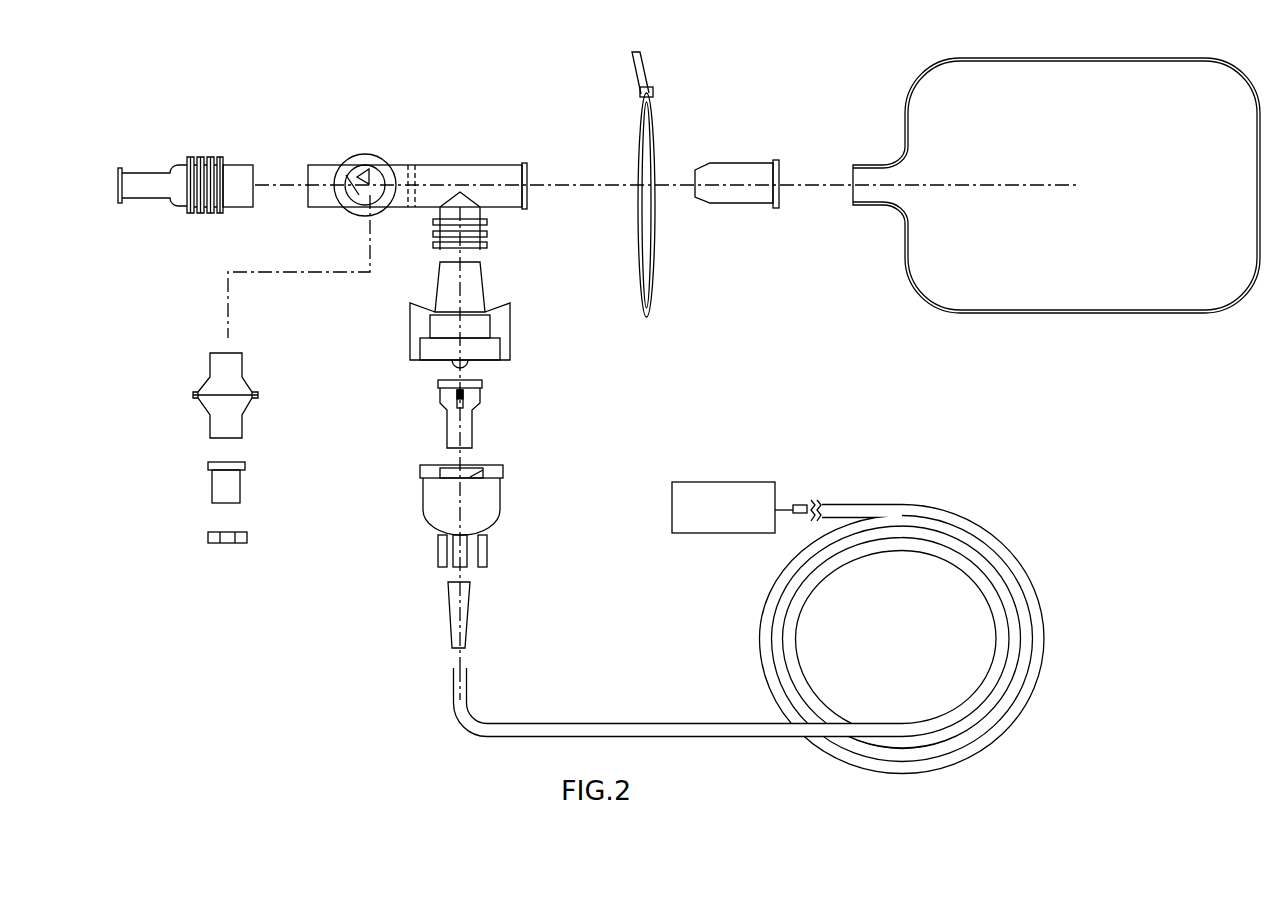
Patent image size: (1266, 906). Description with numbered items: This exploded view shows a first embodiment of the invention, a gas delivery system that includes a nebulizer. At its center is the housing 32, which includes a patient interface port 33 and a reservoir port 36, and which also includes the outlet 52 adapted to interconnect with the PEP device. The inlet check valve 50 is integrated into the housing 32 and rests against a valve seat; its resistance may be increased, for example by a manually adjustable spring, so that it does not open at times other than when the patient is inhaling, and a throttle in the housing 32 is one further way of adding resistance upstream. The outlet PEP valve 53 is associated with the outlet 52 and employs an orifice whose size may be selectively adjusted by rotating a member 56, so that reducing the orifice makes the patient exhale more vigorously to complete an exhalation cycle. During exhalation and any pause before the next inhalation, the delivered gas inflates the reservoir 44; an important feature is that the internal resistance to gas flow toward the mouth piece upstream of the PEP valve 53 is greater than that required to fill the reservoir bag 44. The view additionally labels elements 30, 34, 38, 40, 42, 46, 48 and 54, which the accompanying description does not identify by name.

The sampling system 30 is at (268, 100).
The housing 32 is at (414, 184).
The patient interface port 33 is at (306, 170).
The mouthpiece connector 34 is at (148, 180).
The reservoir port 36 is at (530, 165).
The flow sensor / fitting assembly 38 is at (535, 308).
The analyzer unit 40 is at (725, 482).
The tubing 42 is at (895, 503).
The reservoir bag 44 is at (1050, 72).
The bag connector 46 is at (728, 180).
The strap 48 is at (650, 305).
The inlet check valve 50 is at (412, 165).
The outlet 52 is at (352, 178).
The PEP valve 53 is at (350, 205).
The filter valve 54 is at (192, 430).
The member 56 is at (208, 538).